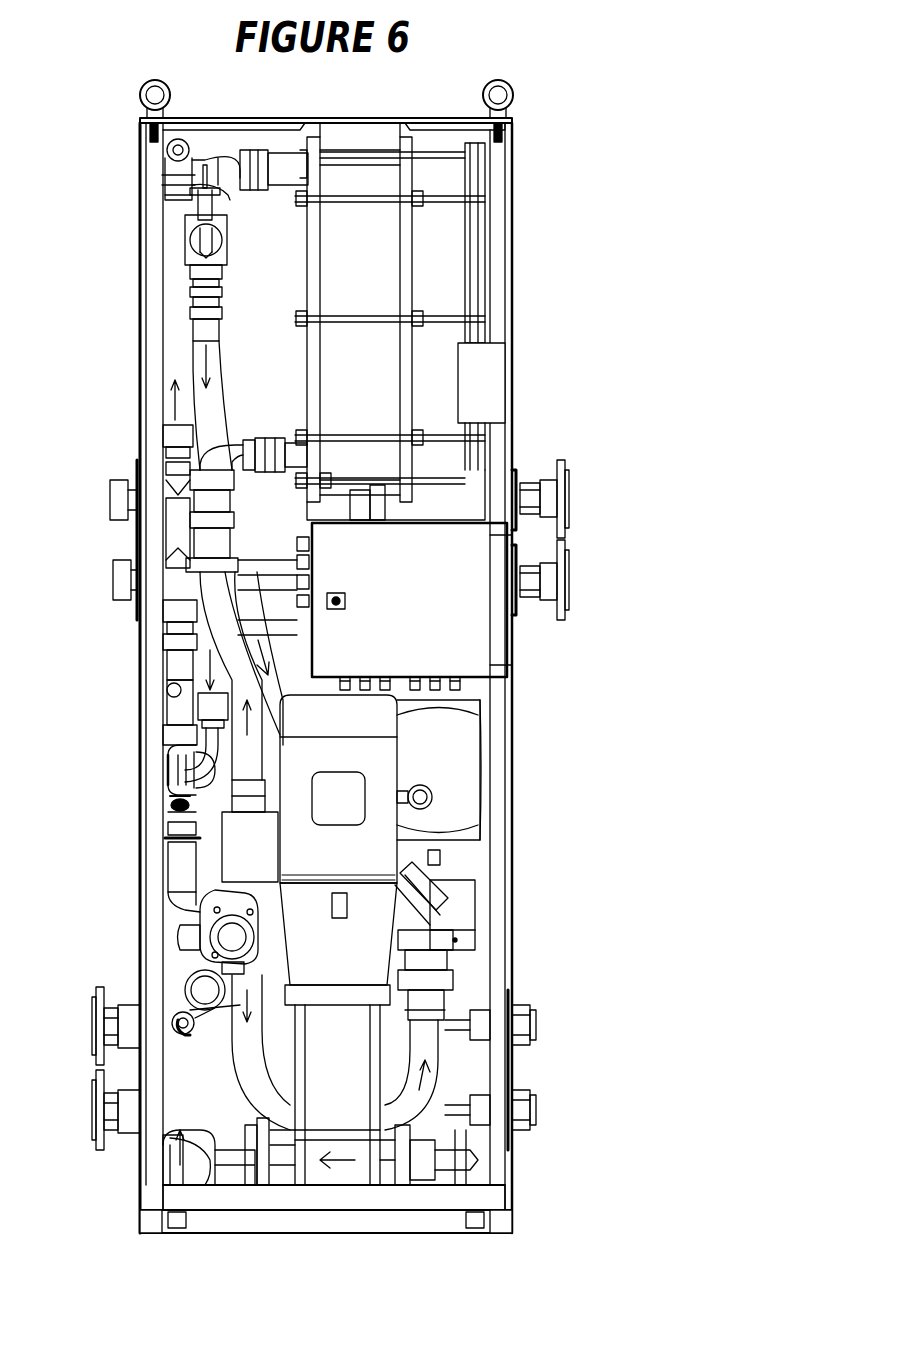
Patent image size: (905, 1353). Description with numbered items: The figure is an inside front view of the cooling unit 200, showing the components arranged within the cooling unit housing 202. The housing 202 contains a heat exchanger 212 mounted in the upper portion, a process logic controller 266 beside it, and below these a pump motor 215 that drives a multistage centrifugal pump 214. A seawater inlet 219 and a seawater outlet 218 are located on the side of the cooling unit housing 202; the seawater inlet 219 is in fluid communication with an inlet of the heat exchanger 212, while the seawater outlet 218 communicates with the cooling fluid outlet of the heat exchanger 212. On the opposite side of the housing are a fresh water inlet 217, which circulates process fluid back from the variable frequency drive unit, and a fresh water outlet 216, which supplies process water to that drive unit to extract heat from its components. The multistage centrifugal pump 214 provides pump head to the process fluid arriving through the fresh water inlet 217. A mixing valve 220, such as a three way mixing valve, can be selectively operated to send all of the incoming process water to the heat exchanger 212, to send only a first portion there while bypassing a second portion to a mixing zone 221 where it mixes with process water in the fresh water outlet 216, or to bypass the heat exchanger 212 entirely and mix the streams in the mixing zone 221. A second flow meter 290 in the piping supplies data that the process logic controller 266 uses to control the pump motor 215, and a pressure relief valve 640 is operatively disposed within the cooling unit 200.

The cooling unit 200 is at (84, 90).
The cooling unit housing 202 is at (140, 297).
The heat exchanger 212 is at (410, 255).
The multistage centrifugal pump 214 is at (340, 1173).
The pump motor 215 is at (343, 802).
The fresh water outlet 216 is at (100, 987).
The fresh water inlet 217 is at (100, 1150).
The seawater outlet 218 is at (563, 462).
The seawater inlet 219 is at (557, 620).
The mixing valve 220 is at (178, 800).
The mixing zone 221 is at (445, 972).
The process logic controller 266 is at (512, 652).
The second flow meter 290 is at (200, 910).
The pressure relief valve 640 is at (170, 760).